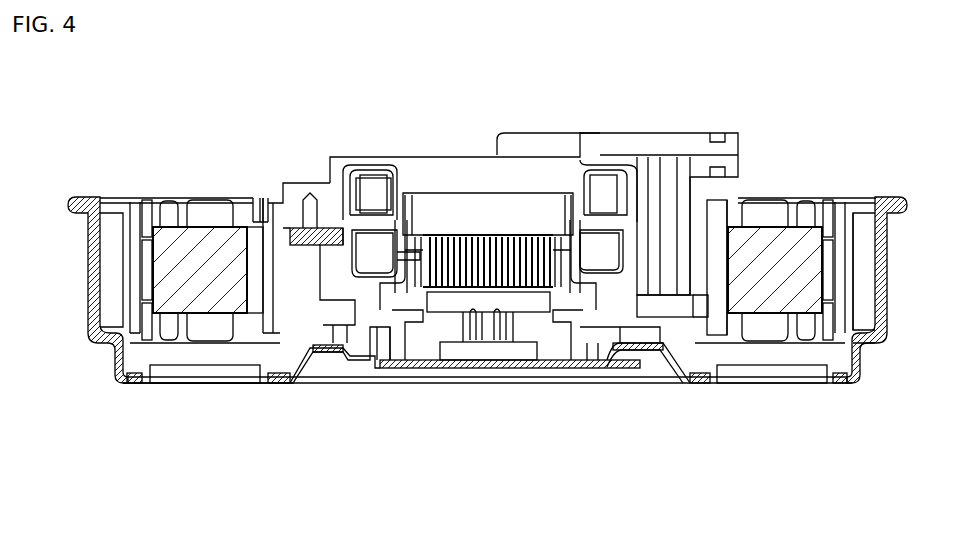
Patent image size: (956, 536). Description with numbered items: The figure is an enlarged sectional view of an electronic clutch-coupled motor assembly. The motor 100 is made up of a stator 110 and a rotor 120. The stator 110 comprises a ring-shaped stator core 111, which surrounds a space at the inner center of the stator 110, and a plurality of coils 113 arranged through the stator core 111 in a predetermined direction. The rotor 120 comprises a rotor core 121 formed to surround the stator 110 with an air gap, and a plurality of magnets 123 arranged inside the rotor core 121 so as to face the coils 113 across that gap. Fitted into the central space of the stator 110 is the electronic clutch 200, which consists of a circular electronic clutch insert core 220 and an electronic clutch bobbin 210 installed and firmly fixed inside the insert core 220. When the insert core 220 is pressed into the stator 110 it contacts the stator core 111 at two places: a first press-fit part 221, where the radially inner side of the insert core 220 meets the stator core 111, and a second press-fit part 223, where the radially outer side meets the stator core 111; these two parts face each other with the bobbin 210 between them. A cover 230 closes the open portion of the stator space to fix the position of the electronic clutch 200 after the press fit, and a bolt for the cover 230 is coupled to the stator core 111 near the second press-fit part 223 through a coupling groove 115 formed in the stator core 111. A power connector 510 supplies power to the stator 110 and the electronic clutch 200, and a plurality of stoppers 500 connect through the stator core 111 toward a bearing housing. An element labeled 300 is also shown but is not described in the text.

The motor 100 is at (880, 493).
The stator 110 is at (112, 190).
The stator core 111 is at (793, 313).
The coils 113 is at (733, 305).
The coupling groove 115 is at (307, 207).
The rotor 120 is at (918, 448).
The rotor core 121 is at (858, 360).
The magnets 123 is at (870, 320).
The electronic clutch 200 is at (432, 95).
The electronic clutch bobbin 210 is at (368, 180).
The electronic clutch insert core 220 is at (402, 155).
The first press-fit part 221 is at (397, 192).
The second press-fit part 223 is at (342, 178).
The cover 230 is at (313, 247).
The terminal block 300 is at (559, 297).
The stoppers 500 is at (655, 178).
The power connector 510 is at (730, 133).